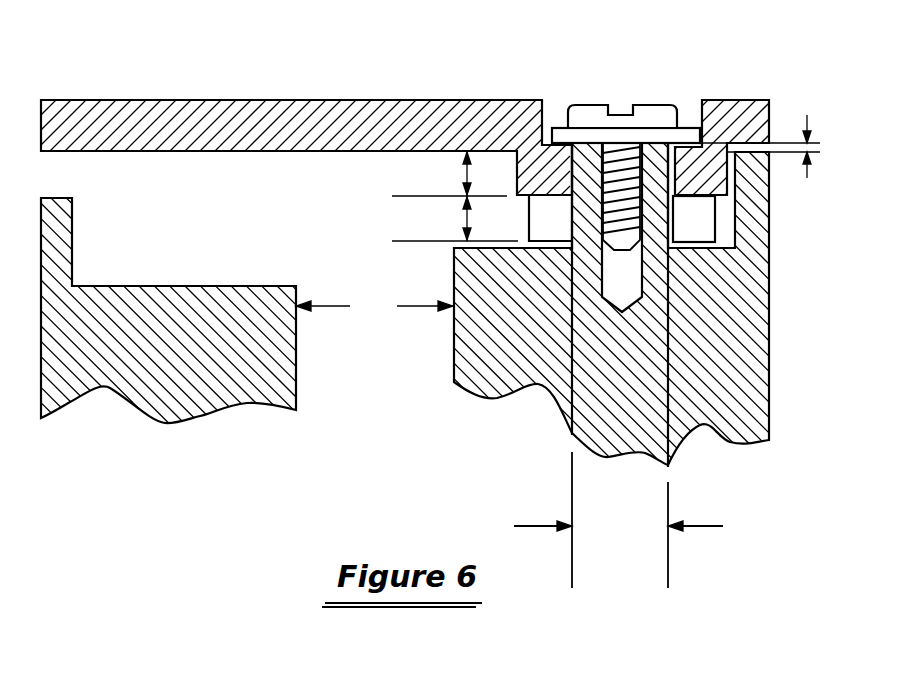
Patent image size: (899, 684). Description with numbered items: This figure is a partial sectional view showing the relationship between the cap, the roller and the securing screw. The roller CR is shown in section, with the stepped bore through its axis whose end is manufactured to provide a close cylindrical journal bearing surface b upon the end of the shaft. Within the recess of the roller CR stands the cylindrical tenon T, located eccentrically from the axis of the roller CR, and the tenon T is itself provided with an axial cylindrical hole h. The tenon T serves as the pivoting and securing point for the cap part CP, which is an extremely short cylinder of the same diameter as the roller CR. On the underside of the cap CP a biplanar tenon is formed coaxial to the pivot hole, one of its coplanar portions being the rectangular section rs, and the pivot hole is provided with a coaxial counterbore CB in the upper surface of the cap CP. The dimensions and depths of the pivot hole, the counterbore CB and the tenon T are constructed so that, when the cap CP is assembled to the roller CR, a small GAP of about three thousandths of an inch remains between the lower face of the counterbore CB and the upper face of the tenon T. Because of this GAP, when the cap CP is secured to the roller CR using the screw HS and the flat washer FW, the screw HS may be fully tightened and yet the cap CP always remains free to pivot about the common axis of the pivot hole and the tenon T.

The cap part CP is at (492, 101).
The screw HS is at (593, 107).
The flat washer FW is at (690, 128).
The gap GAP is at (762, 158).
The counterbore CB is at (449, 173).
The rectangular section rs is at (455, 218).
The roller CR is at (43, 330).
The journal bearing surface b is at (374, 306).
The axial cylindrical hole h is at (618, 285).
The tenon T is at (618, 520).